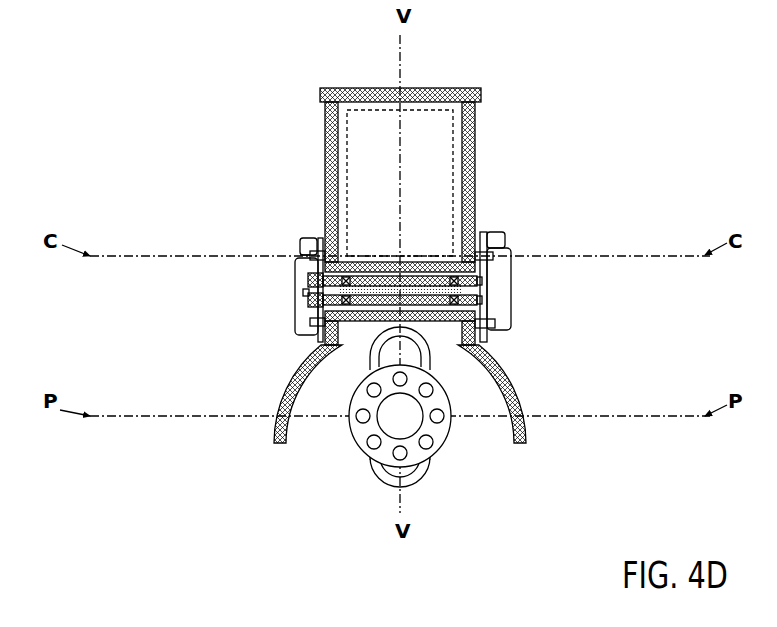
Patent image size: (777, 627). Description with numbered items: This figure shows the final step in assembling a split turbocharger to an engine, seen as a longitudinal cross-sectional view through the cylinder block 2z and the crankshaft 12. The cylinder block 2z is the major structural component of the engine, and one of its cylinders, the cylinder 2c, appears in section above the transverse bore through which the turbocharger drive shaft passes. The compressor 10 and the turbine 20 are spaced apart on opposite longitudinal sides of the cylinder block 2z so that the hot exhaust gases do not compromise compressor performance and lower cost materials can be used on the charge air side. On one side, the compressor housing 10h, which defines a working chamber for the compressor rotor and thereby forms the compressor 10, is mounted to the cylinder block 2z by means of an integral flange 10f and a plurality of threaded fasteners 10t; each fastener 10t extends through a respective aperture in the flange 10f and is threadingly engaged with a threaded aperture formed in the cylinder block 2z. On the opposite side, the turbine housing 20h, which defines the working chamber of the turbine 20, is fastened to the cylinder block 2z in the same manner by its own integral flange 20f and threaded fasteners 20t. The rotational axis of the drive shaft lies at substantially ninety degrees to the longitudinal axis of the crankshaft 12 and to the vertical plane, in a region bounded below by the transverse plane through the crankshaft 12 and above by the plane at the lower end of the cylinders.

The cylinder block 2z is at (327, 150).
The cylinder 2c is at (400, 183).
The compressor 10 is at (293, 323).
The compressor housing 10h is at (300, 242).
The integral flange 10f is at (320, 250).
The threaded fasteners 10t is at (313, 317).
The turbine 20 is at (512, 327).
The turbine housing 20h is at (505, 238).
The integral flange 20f is at (483, 250).
The threaded fasteners 20t is at (508, 317).
The crankshaft 12 is at (355, 432).